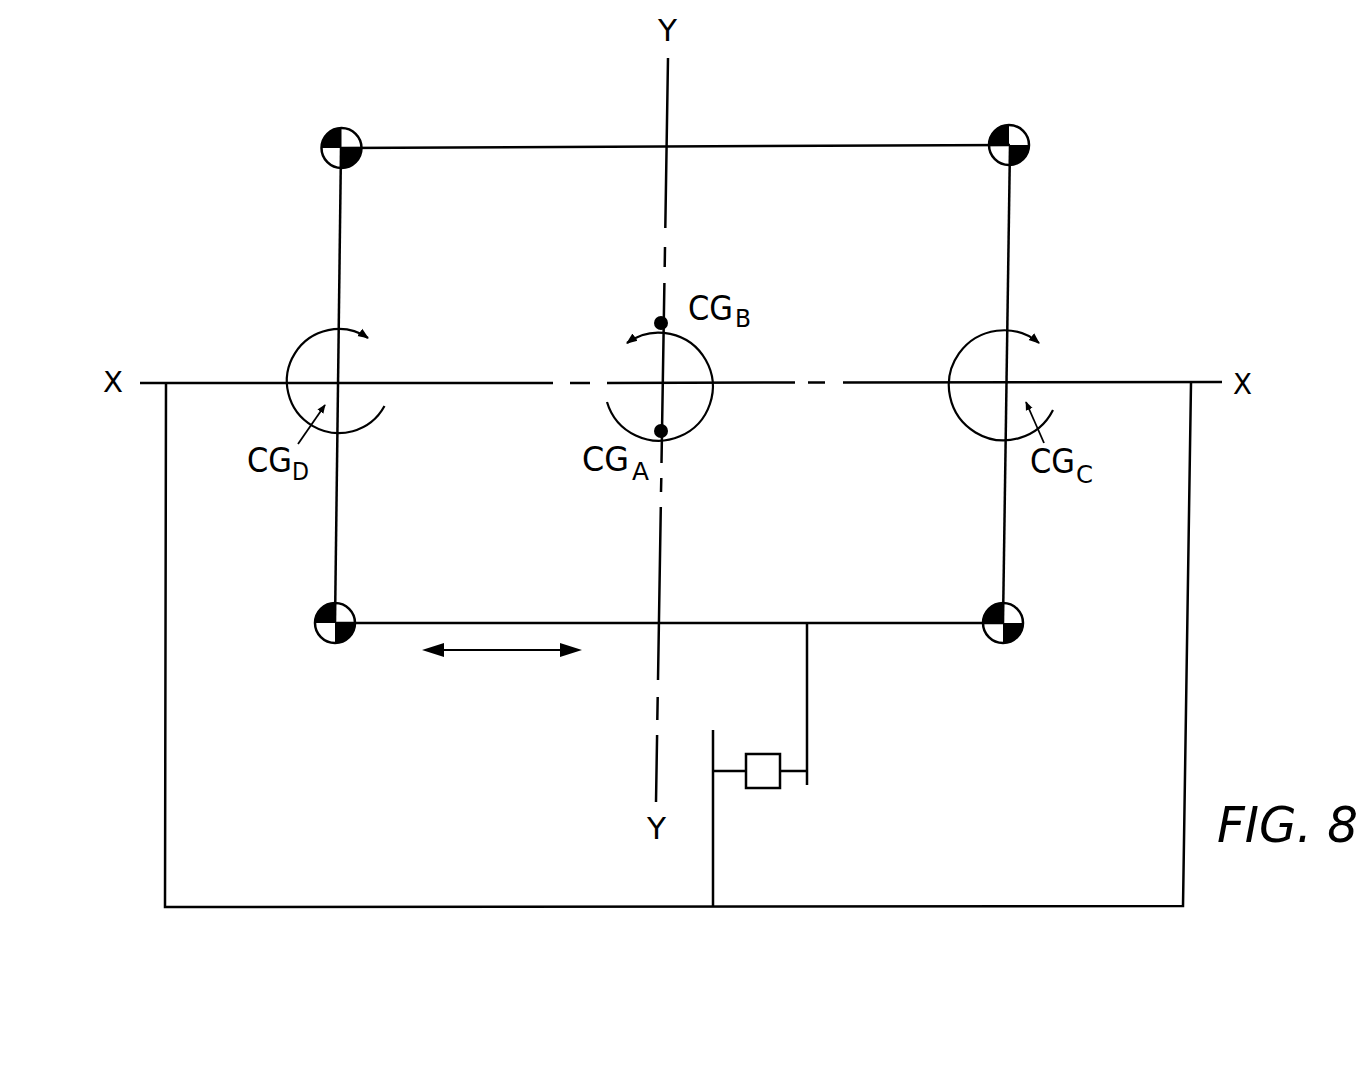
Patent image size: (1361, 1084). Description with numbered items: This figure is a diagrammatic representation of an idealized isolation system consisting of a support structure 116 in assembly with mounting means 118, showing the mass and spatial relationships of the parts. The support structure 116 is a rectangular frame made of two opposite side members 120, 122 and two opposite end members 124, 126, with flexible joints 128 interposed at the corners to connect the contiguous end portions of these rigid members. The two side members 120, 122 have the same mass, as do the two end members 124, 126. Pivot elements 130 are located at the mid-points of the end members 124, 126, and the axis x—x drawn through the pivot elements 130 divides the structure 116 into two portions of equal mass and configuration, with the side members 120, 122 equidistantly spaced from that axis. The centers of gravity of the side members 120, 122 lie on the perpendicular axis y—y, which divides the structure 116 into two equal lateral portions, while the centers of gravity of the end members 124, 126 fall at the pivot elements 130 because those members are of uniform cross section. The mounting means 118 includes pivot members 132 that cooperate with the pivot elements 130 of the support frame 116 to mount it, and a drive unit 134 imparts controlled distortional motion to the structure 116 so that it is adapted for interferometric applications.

The support structure 116 is at (1014, 247).
The mounting means 118 is at (1194, 698).
The side member 120 is at (860, 146).
The side member 122 is at (880, 624).
The end member 124 is at (1004, 518).
The end member 126 is at (337, 520).
The flexible joints 128 is at (322, 151).
The pivot elements 130 is at (358, 372).
The pivot members 132 is at (197, 383).
The drive unit 134 is at (763, 782).